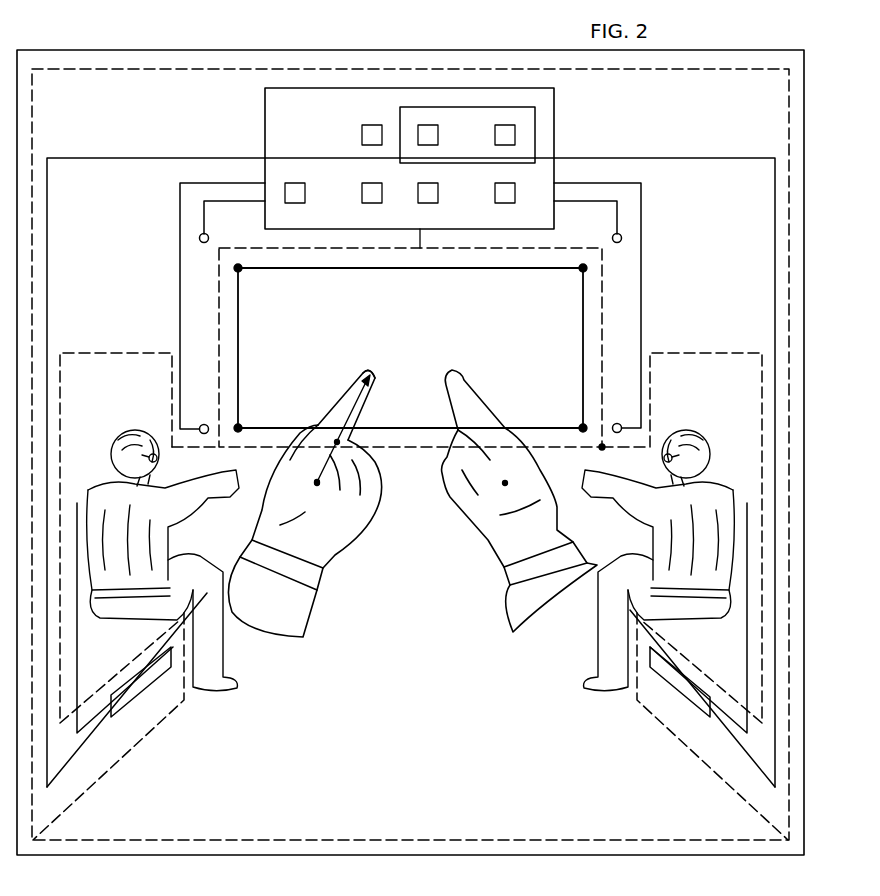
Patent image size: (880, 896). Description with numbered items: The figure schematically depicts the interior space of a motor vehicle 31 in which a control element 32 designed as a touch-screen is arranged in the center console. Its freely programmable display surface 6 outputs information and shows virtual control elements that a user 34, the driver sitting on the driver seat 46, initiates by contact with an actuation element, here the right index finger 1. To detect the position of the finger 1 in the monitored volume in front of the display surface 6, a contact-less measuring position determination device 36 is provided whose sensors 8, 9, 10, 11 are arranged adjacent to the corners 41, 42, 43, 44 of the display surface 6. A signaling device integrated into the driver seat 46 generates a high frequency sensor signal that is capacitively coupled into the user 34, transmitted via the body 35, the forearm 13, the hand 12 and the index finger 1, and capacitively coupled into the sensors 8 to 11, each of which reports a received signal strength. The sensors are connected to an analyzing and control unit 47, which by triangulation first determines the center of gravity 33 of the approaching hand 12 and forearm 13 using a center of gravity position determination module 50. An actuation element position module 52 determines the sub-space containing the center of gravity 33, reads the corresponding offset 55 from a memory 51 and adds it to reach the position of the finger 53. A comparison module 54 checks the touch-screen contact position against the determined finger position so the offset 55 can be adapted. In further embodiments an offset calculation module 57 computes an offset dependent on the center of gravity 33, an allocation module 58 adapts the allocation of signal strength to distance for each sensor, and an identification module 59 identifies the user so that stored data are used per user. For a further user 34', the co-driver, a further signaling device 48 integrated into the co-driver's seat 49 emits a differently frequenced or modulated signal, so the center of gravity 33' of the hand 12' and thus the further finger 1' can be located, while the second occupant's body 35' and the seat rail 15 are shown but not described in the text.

The motor vehicle 31 is at (284, 48).
The analyzing and control unit 47 is at (261, 125).
The actuation element position module 52 is at (414, 169).
The center of gravity position determination module 50 is at (361, 134).
The memory 51 is at (361, 194).
The comparison module 54 is at (494, 194).
The offset 55 is at (439, 190).
The offset calculation module 57 is at (439, 132).
The allocation module 58 is at (494, 138).
The identification module 59 is at (306, 190).
The sensor 9 is at (199, 238).
The sensor 10 is at (622, 238).
The sensor 8 is at (204, 424).
The sensor 11 is at (617, 423).
The freely programmable display surface 6 is at (418, 338).
The control element 32 is at (413, 438).
The corner 41 is at (244, 426).
The corner 42 is at (244, 273).
The corner 43 is at (578, 273).
The corner 44 is at (578, 426).
The position determination device 36 is at (600, 450).
The user 34 is at (158, 560).
The further user 34' is at (665, 560).
The body 35 is at (125, 618).
The second seat 35' is at (698, 618).
The driver seat 46 is at (92, 730).
The co-driver's seat 49 is at (733, 726).
The seat rail 15 is at (153, 692).
The further signaling device 48 is at (659, 718).
The hand 12 is at (322, 496).
The hand 12' is at (516, 530).
The forearm 13 is at (318, 618).
The right index finger 1 is at (362, 405).
The further finger 1' is at (462, 400).
The position of the finger 53 is at (365, 368).
The center of gravity 33 is at (310, 508).
The center of gravity 33' is at (513, 508).